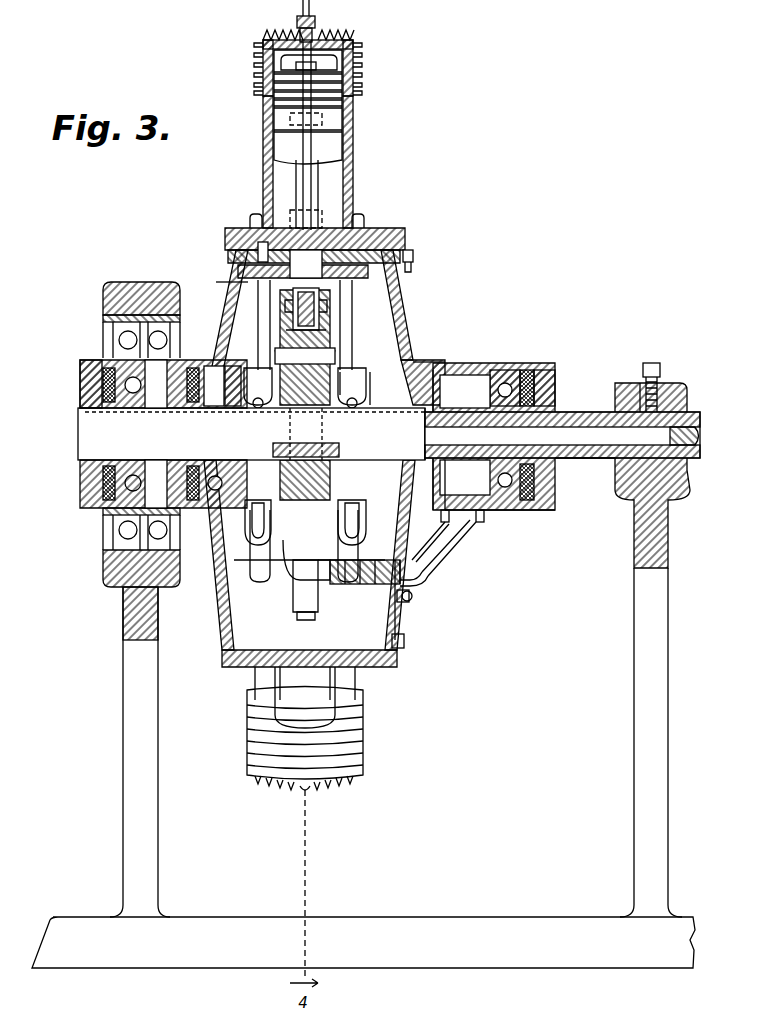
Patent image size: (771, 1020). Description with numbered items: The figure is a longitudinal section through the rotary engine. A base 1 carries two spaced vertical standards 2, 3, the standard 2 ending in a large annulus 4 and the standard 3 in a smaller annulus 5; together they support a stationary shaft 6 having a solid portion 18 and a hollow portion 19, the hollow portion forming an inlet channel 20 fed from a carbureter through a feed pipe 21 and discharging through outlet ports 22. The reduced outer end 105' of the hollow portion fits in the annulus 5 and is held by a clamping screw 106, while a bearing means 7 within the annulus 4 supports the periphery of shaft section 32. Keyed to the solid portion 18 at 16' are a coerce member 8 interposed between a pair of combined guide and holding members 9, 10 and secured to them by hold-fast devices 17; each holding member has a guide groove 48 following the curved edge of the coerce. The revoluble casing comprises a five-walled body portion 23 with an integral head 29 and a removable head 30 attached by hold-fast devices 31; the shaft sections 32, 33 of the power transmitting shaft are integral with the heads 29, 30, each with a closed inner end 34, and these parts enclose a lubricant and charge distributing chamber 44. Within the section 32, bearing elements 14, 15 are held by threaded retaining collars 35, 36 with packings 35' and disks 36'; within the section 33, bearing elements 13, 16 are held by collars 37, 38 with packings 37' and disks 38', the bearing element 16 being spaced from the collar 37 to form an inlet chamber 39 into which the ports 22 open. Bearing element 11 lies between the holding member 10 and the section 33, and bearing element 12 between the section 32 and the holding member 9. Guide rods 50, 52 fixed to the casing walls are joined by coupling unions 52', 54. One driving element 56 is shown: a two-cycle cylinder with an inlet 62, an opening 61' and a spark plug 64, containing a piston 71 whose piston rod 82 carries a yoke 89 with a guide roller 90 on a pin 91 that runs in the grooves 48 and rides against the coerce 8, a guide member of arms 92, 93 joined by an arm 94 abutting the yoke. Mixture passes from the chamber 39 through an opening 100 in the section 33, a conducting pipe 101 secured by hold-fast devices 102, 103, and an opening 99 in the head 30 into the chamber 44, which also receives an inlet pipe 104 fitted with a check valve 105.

The base 1 is at (360, 935).
The vertical standard 2 is at (148, 823).
The vertical standard 3 is at (632, 770).
The annulus 4 is at (137, 288).
The annulus 5 is at (640, 475).
The stationary shaft 6 is at (447, 378).
The bearing means 7 is at (120, 350).
The coerce member 8 is at (283, 354).
The holding member 9 is at (283, 340).
The holding member 10 is at (380, 325).
The bearing element 11 is at (390, 372).
The bearing element 12 is at (221, 374).
The bearing element 13 is at (440, 375).
The bearing element 14 is at (206, 378).
The bearing element 15 is at (97, 372).
The bearing element 16 is at (515, 365).
The key 16' is at (289, 440).
The hold-fast devices 17 is at (385, 348).
The solid portion 18 is at (118, 450).
The hollow portion 19 is at (582, 462).
The inlet channel 20 is at (560, 440).
The feed pipe 21 is at (697, 430).
The outlet ports 22 is at (494, 436).
The body portion 23 is at (402, 246).
The head 29 is at (212, 282).
The head 30 is at (400, 616).
The hold-fast devices 31 is at (412, 257).
The shaft section 32 is at (140, 490).
The shaft section 33 is at (520, 510).
The closed inner end 34 is at (140, 565).
The retaining collar 35 is at (119, 385).
The packings 35' is at (118, 478).
The retaining collar 36 is at (128, 409).
The disks 36' is at (130, 496).
The retaining collar 37 is at (455, 485).
The packings 37' is at (507, 410).
The retaining collar 38 is at (551, 418).
The disks 38' is at (531, 354).
The inlet chamber 39 is at (505, 382).
The distributing chamber 44 is at (232, 645).
The guide groove 48 is at (358, 300).
The guide rod 50 is at (360, 310).
The guide rod 52 is at (315, 450).
The coupling union 52' is at (324, 475).
The coupling union 54 is at (252, 408).
The driving element 56 is at (338, 37).
The opening 61' is at (341, 185).
The inlet 62 is at (326, 119).
The spark plug 64 is at (300, 17).
The piston 71 is at (283, 138).
The piston rod 82 is at (303, 190).
The yoke 89 is at (262, 246).
The guide roller 90 is at (360, 250).
The pin 91 is at (283, 327).
The arm 92 is at (368, 585).
The arm 93 is at (228, 598).
The arm 94 is at (345, 245).
The opening 99 is at (430, 578).
The opening 100 is at (456, 508).
The conducting pipe 101 is at (452, 545).
The hold-fast devices 102 is at (447, 512).
The hold-fast devices 103 is at (412, 594).
The inlet pipe 104 is at (296, 594).
The check valve 105 is at (326, 625).
The reduced outer terminal part 105' is at (645, 373).
The clamping screw 106 is at (656, 370).